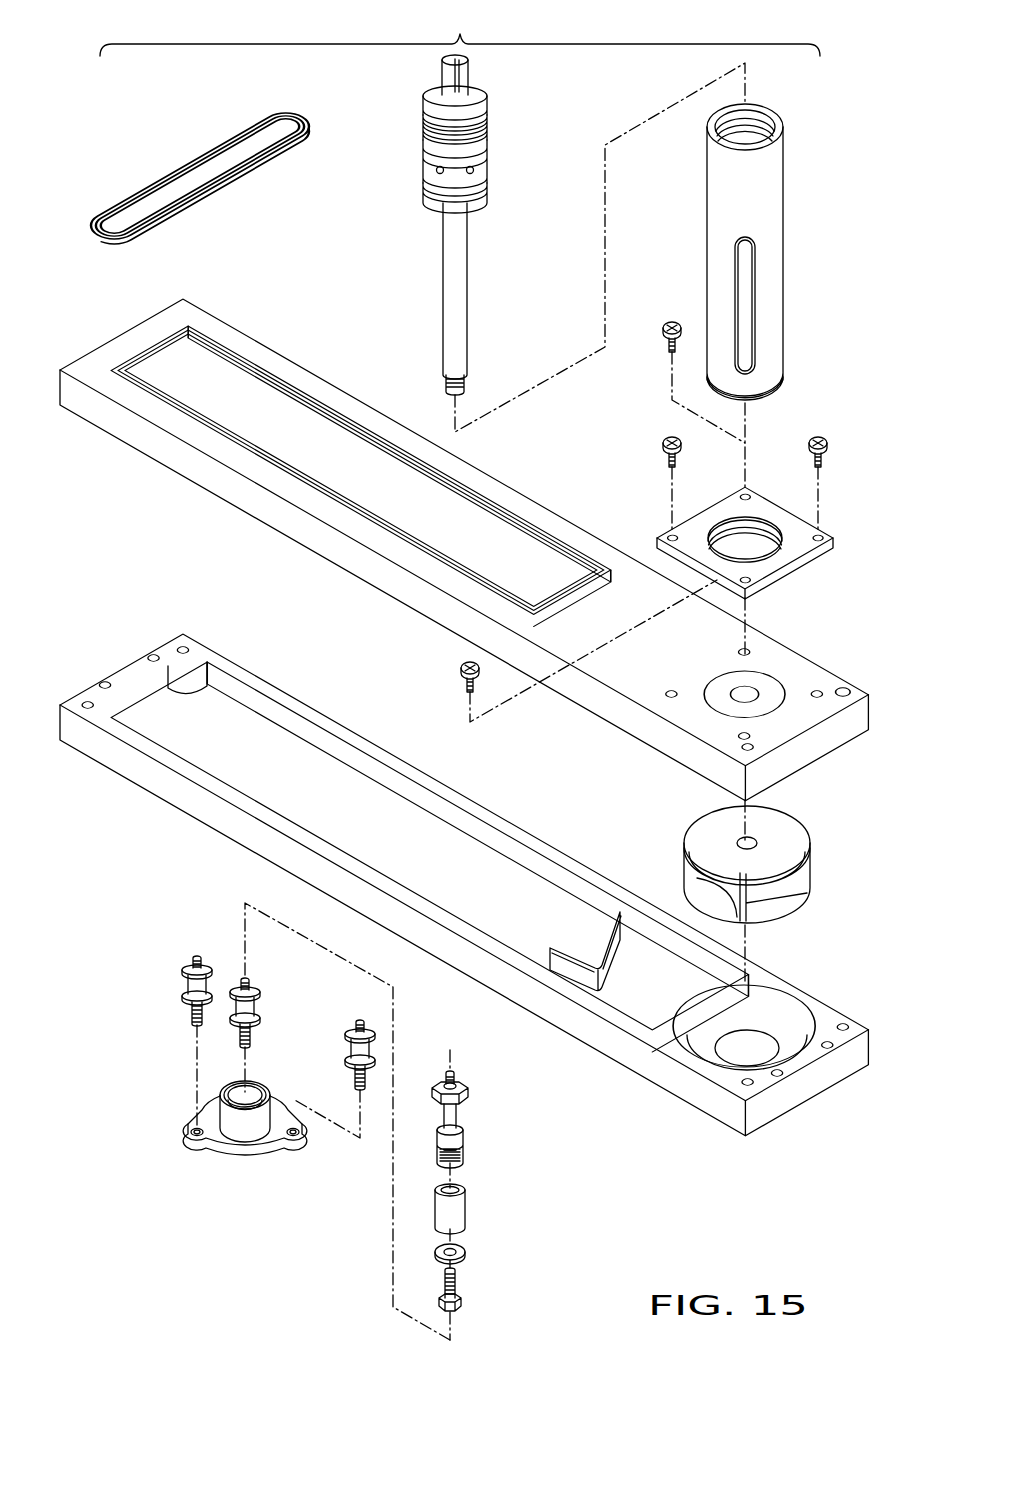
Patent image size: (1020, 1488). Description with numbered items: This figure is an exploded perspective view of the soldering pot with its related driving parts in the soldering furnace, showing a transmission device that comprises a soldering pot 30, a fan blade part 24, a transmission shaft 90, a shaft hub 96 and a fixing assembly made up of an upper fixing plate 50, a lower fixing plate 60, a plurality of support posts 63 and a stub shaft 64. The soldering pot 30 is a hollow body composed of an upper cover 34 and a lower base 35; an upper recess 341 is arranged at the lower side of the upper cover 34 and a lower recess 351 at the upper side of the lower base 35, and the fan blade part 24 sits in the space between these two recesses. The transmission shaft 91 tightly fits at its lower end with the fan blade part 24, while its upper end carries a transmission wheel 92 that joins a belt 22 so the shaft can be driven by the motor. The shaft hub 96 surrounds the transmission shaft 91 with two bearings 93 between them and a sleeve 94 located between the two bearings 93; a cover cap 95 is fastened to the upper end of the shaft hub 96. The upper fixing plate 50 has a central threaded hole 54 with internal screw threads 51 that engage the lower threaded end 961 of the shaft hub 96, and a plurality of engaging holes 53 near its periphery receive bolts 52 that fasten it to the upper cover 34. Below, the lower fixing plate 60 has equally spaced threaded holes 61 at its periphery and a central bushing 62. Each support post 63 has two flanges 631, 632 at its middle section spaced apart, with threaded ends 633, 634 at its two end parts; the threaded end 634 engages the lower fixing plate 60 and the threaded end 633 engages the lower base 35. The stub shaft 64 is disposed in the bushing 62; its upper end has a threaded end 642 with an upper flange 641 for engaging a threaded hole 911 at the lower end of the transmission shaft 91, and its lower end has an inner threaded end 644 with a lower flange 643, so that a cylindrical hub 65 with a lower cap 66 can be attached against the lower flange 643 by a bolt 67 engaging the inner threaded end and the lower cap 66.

The transmission shaft 90 is at (460, 29).
The belt 22 is at (182, 152).
The transmission shaft 91 is at (467, 225).
The threaded hole 911 is at (440, 384).
The transmission wheel 92 is at (428, 98).
The bearing 93 is at (487, 132).
The sleeve 94 is at (487, 160).
The cover cap 95 is at (487, 112).
The shaft hub 96 is at (797, 252).
The lower threaded end 961 is at (783, 392).
The bolt 52 is at (670, 322).
The upper fixing plate 50 is at (773, 541).
The internal screw threads 51 is at (745, 538).
The engaging hole 53 is at (745, 538).
The threaded hole 54 is at (755, 546).
The soldering pot 30 is at (160, 520).
The upper cover 34 is at (464, 550).
The upper recess 341 is at (744, 694).
The lower base 35 is at (475, 857).
The lower recess 351 is at (744, 1026).
The fan blade part 24 is at (685, 866).
The lower fixing plate 60 is at (211, 1121).
The threaded hole 61 is at (187, 1125).
The bushing 62 is at (256, 1083).
The support post 63 is at (230, 999).
The flange 631 is at (151, 962).
The flange 632 is at (148, 1020).
The threaded end 633 is at (143, 938).
The threaded end 634 is at (146, 1043).
The stub shaft 64 is at (506, 1193).
The upper flange 641 is at (472, 1088).
The threaded end 642 is at (462, 1077).
The lower flange 643 is at (464, 1141).
The inner threaded end 644 is at (462, 1162).
The cylindrical hub 65 is at (465, 1221).
The lower cap 66 is at (465, 1253).
The bolt 67 is at (465, 1301).